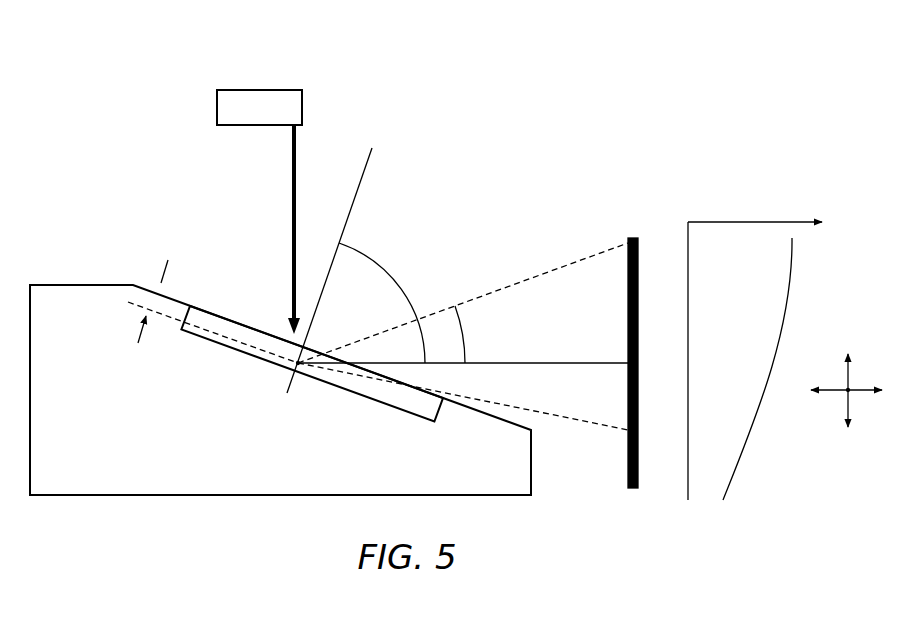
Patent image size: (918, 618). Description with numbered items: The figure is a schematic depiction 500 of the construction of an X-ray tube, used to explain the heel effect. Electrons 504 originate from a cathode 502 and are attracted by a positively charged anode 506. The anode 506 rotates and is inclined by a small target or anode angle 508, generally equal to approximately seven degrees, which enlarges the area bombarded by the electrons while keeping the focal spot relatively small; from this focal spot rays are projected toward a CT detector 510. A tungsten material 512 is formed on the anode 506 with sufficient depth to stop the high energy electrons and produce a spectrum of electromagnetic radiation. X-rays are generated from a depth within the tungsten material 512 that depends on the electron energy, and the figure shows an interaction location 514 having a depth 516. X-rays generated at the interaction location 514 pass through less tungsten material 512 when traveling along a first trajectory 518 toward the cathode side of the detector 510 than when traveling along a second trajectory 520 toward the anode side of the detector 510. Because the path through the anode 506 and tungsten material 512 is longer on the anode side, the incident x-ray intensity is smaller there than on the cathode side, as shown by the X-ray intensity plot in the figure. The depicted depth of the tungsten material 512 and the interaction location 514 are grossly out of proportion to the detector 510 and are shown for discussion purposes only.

The X-ray tube construction 500 is at (597, 62).
The cathode 502 is at (217, 98).
The electrons 504 is at (262, 180).
The anode 506 is at (150, 412).
The target or anode angle 508 is at (330, 155).
The CT detector 510 is at (638, 248).
The tungsten material 512 is at (197, 318).
The interaction location 514 is at (287, 393).
The depth 516 is at (158, 287).
The first trajectory 518 is at (543, 272).
The second trajectory 520 is at (583, 420).